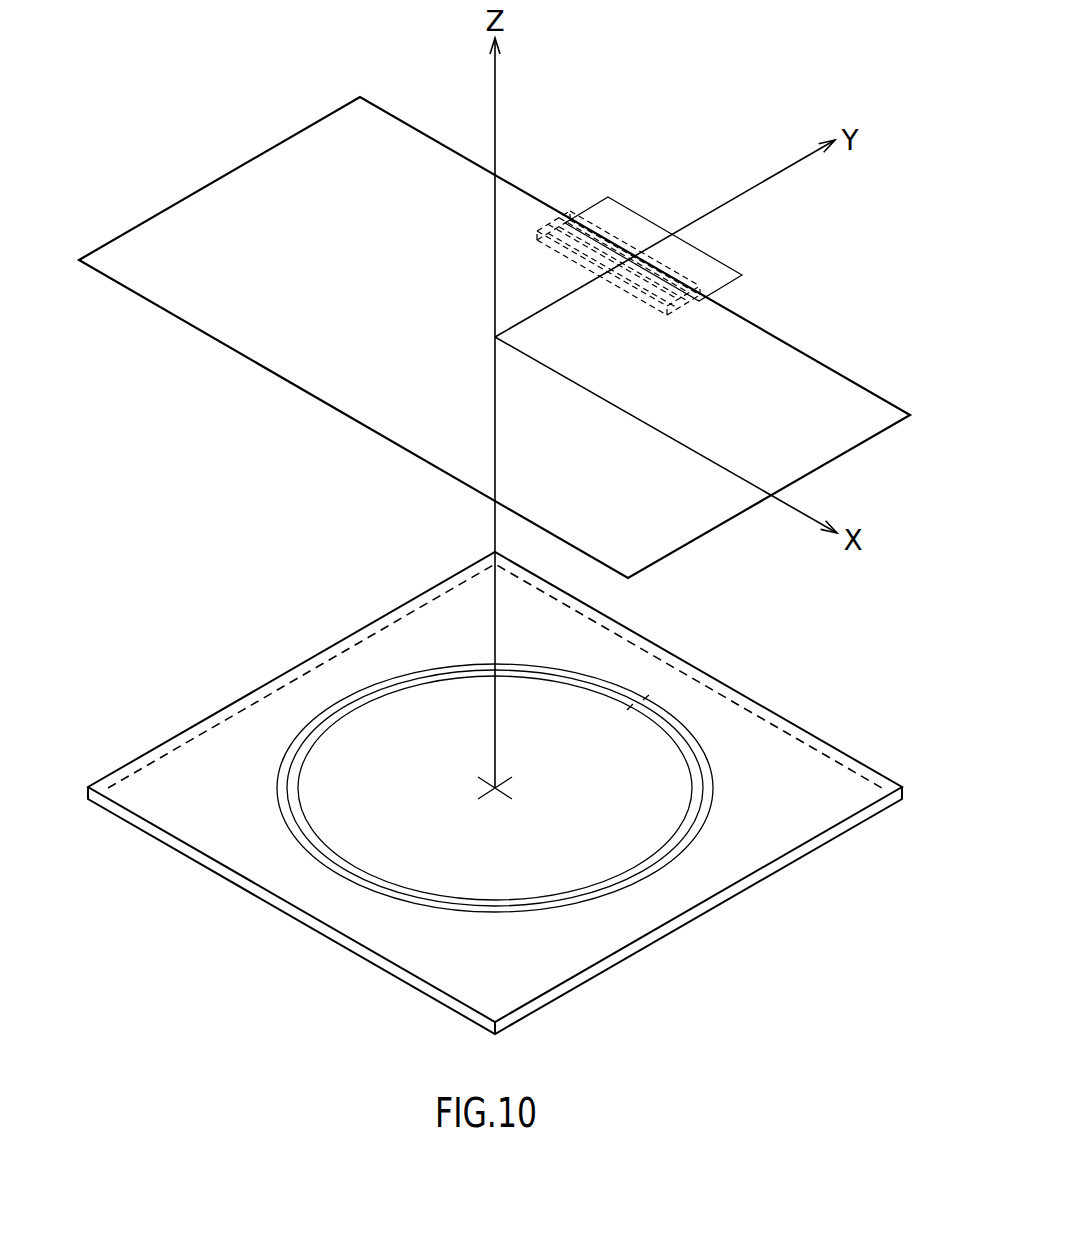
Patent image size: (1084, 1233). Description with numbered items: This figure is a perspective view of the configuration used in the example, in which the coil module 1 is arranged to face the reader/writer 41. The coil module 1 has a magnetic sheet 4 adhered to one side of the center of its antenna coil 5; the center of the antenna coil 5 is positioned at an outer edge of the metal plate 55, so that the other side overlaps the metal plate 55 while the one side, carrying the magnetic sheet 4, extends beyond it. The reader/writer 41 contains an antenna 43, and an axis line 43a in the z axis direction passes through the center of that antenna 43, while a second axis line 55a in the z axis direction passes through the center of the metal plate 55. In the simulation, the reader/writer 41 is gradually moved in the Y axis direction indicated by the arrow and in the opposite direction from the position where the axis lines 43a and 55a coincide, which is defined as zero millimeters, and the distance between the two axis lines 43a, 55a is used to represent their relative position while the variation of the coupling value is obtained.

The coil module 1 is at (672, 193).
The magnetic sheet 4 is at (712, 263).
The antenna coil 5 is at (693, 303).
The metal plate 55 is at (198, 303).
The reader/writer 41 is at (550, 943).
The antenna 43 is at (640, 867).
The axis line 43a is at (327, 720).
The axis line 55a is at (493, 737).